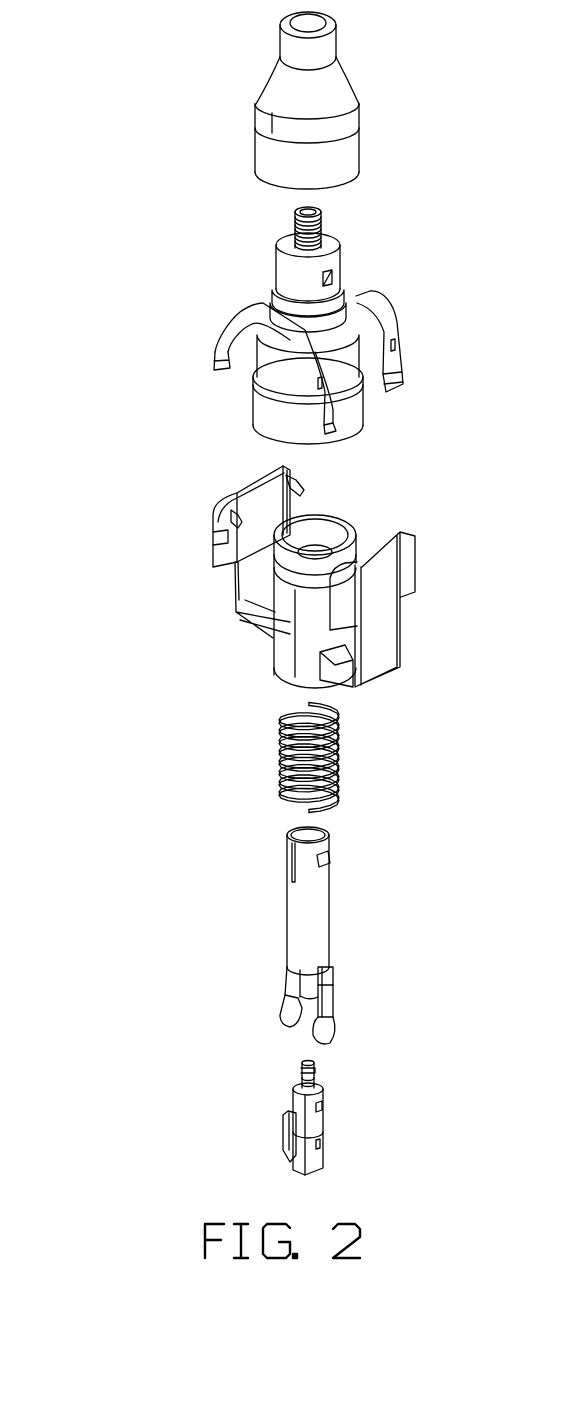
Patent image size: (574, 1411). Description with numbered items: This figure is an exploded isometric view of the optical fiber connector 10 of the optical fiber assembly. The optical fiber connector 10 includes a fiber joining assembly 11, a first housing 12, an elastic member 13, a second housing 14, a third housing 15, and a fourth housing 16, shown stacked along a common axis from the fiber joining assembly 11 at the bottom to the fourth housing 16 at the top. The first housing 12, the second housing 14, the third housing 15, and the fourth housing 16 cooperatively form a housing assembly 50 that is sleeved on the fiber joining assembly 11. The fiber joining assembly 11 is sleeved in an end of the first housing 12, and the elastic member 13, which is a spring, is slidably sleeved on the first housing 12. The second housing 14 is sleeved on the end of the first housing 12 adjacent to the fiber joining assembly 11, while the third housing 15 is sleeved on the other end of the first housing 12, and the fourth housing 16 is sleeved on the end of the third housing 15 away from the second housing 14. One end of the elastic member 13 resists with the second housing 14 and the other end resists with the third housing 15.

The optical fiber connector 10 is at (183, 78).
The housing assembly 50 is at (197, 660).
The fiber joining assembly 11 is at (313, 1122).
The first housing 12 is at (315, 915).
The elastic member 13 is at (338, 762).
The second housing 14 is at (380, 648).
The third housing 15 is at (350, 413).
The fourth housing 16 is at (340, 160).